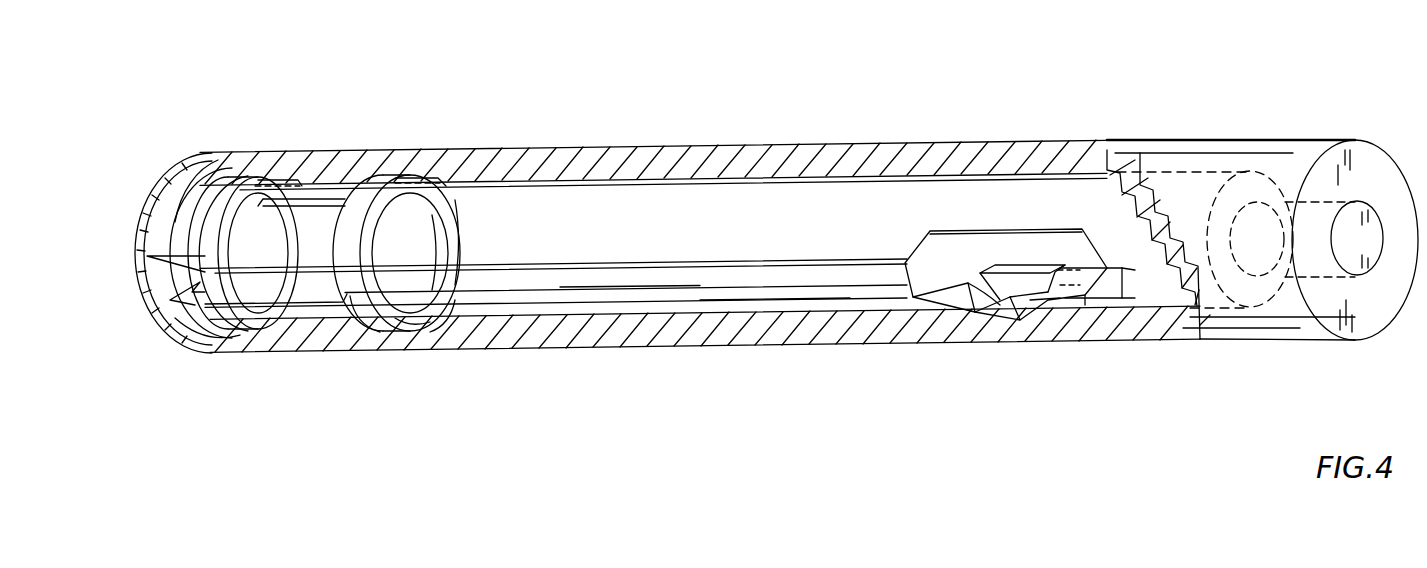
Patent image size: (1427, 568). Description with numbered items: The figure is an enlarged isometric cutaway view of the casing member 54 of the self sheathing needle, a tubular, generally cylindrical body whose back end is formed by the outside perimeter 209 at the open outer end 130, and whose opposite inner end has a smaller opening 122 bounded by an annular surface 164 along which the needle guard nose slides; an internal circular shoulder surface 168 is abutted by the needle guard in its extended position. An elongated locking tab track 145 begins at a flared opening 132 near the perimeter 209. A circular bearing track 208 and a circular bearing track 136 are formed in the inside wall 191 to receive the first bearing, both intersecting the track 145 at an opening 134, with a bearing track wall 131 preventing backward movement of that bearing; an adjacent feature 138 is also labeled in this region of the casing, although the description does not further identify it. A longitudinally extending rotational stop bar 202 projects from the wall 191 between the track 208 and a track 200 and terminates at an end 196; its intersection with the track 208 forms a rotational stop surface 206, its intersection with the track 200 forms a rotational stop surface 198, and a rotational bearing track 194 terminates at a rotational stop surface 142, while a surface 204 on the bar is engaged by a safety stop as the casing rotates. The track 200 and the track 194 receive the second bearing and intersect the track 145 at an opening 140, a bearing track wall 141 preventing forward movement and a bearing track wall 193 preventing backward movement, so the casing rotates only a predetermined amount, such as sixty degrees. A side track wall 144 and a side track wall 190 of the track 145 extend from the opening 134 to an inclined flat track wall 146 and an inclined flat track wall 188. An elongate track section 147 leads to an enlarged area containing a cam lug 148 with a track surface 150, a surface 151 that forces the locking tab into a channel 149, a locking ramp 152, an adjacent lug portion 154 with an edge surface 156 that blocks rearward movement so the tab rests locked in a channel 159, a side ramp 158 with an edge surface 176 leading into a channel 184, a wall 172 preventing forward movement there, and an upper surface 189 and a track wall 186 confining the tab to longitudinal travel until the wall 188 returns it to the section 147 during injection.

The casing member 54 is at (779, 94).
The opening 122 is at (1372, 232).
The open outer end 130 is at (262, 260).
The bearing track wall 131 is at (320, 318).
The flared opening 132 is at (143, 300).
The opening 134 is at (210, 320).
The circular bearing track 136 is at (190, 332).
The ring inner surface 138 is at (265, 306).
The opening 140 is at (352, 305).
The bearing track wall 141 is at (432, 322).
The rotational stop surface 142 is at (460, 212).
The side track wall 144 is at (518, 303).
The elongated locking tab track 145 is at (614, 283).
The inclined flat track wall 146 is at (917, 302).
The elongate track section 147 is at (740, 286).
The cam lug 148 is at (1020, 283).
The channel 149 is at (967, 303).
The track surface 150 is at (980, 313).
The surface 151 is at (995, 305).
The locking ramp 152 is at (1030, 300).
The lug portion 154 is at (1043, 310).
The edge surface 156 is at (1077, 300).
The side ramp 158 is at (1150, 302).
The channel 159 is at (1095, 303).
The annular surface 164 is at (1358, 278).
The internal circular shoulder surface 168 is at (1257, 185).
The wall 172 is at (1085, 295).
The edge surface 176 is at (1158, 222).
The channel 184 is at (1035, 248).
The track wall 186 is at (1063, 256).
The inclined flat track wall 188 is at (918, 232).
The upper surface 189 is at (995, 235).
The side track wall 190 is at (583, 267).
The inside wall 191 is at (648, 165).
The bearing track wall 193 is at (434, 248).
The rotational bearing track 194 is at (455, 302).
The end 196 is at (440, 196).
The rotational stop surface 198 is at (405, 192).
The track 200 is at (368, 190).
The rotational stop bar 202 is at (335, 205).
The surface 204 is at (292, 200).
The rotational stop surface 206 is at (275, 180).
The circular bearing track 208 is at (190, 222).
The outside perimeter 209 is at (178, 165).